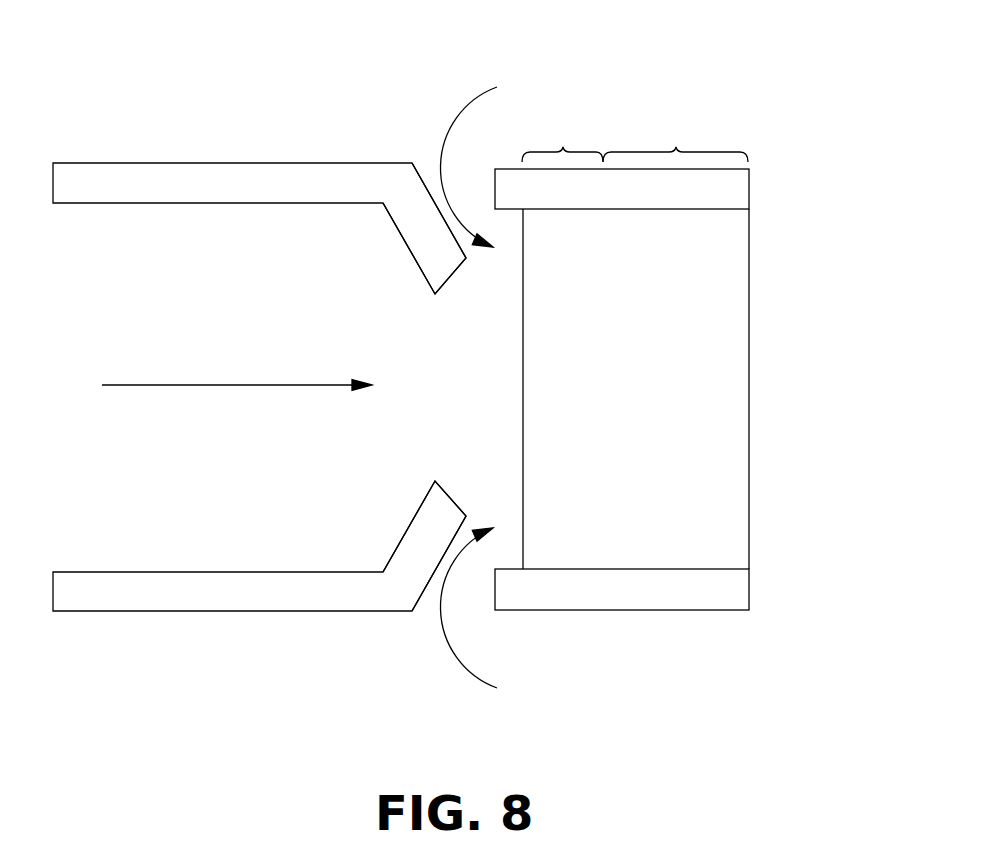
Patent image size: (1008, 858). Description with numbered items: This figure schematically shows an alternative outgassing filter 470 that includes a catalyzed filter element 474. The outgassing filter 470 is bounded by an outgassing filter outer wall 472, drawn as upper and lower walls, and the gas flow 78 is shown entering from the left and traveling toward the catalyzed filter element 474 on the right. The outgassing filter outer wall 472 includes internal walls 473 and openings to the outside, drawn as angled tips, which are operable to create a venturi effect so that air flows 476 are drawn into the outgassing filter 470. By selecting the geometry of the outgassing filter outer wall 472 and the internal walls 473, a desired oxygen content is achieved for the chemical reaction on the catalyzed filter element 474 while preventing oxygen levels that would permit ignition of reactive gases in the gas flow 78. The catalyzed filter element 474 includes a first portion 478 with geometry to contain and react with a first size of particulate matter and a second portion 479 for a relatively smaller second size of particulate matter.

The outgassing filter 470 is at (259, 387).
The outgassing filter outer wall 472 is at (262, 187).
The internal walls 473 is at (417, 218).
The catalyzed filter element 474 is at (708, 420).
The air flows 476 is at (448, 123).
The first portion 478 is at (562, 141).
The second portion 479 is at (675, 141).
The gas flow 78 is at (135, 385).